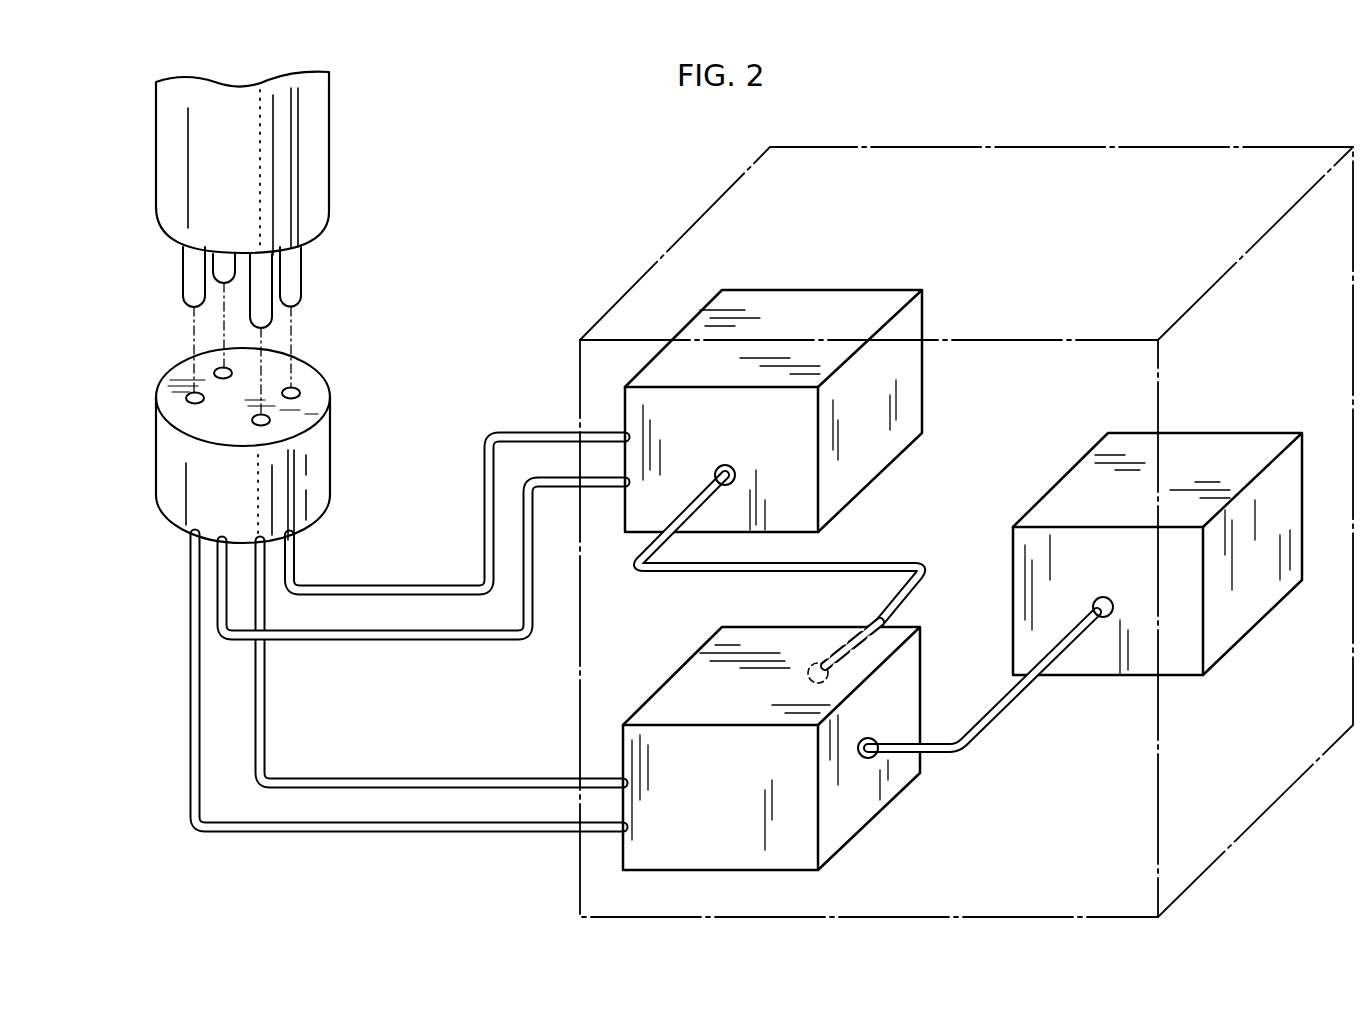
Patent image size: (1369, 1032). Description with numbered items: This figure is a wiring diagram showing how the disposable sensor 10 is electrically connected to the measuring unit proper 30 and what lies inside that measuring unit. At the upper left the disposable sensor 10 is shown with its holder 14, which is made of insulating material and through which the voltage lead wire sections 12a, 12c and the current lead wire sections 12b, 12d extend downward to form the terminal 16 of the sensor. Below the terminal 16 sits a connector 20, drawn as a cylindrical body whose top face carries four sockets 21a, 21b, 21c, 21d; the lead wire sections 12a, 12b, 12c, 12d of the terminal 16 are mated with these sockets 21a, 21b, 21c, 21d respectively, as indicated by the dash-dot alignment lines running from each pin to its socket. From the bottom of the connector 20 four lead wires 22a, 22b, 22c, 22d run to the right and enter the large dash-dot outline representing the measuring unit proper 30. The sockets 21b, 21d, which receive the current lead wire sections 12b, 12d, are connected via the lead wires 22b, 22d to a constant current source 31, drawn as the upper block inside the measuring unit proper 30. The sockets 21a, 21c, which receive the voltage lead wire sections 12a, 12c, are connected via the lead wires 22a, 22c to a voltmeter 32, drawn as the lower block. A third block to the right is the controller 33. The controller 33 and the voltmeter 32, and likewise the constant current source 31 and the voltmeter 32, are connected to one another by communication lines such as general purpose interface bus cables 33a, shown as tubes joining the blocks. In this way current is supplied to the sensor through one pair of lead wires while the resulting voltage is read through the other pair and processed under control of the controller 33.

The disposable sensor 10 is at (145, 125).
The holder 14 is at (329, 131).
The terminal 16 is at (150, 271).
The voltage lead wire section 12a is at (197, 298).
The current lead wire section 12b is at (223, 268).
The voltage lead wire section 12c is at (265, 317).
The current lead wire section 12d is at (293, 262).
The connector 20 is at (172, 500).
The socket 21a is at (192, 404).
The socket 21b is at (216, 376).
The socket 21c is at (268, 425).
The socket 21d is at (303, 394).
The lead wire 22a is at (262, 833).
The lead wire 22b is at (464, 640).
The lead wire 22c is at (300, 778).
The lead wire 22d is at (404, 592).
The measuring unit proper 30 is at (1072, 147).
The constant current source 31 is at (840, 303).
The voltmeter 32 is at (850, 828).
The controller 33 is at (1250, 447).
The GP-IB cable 33a is at (894, 570).